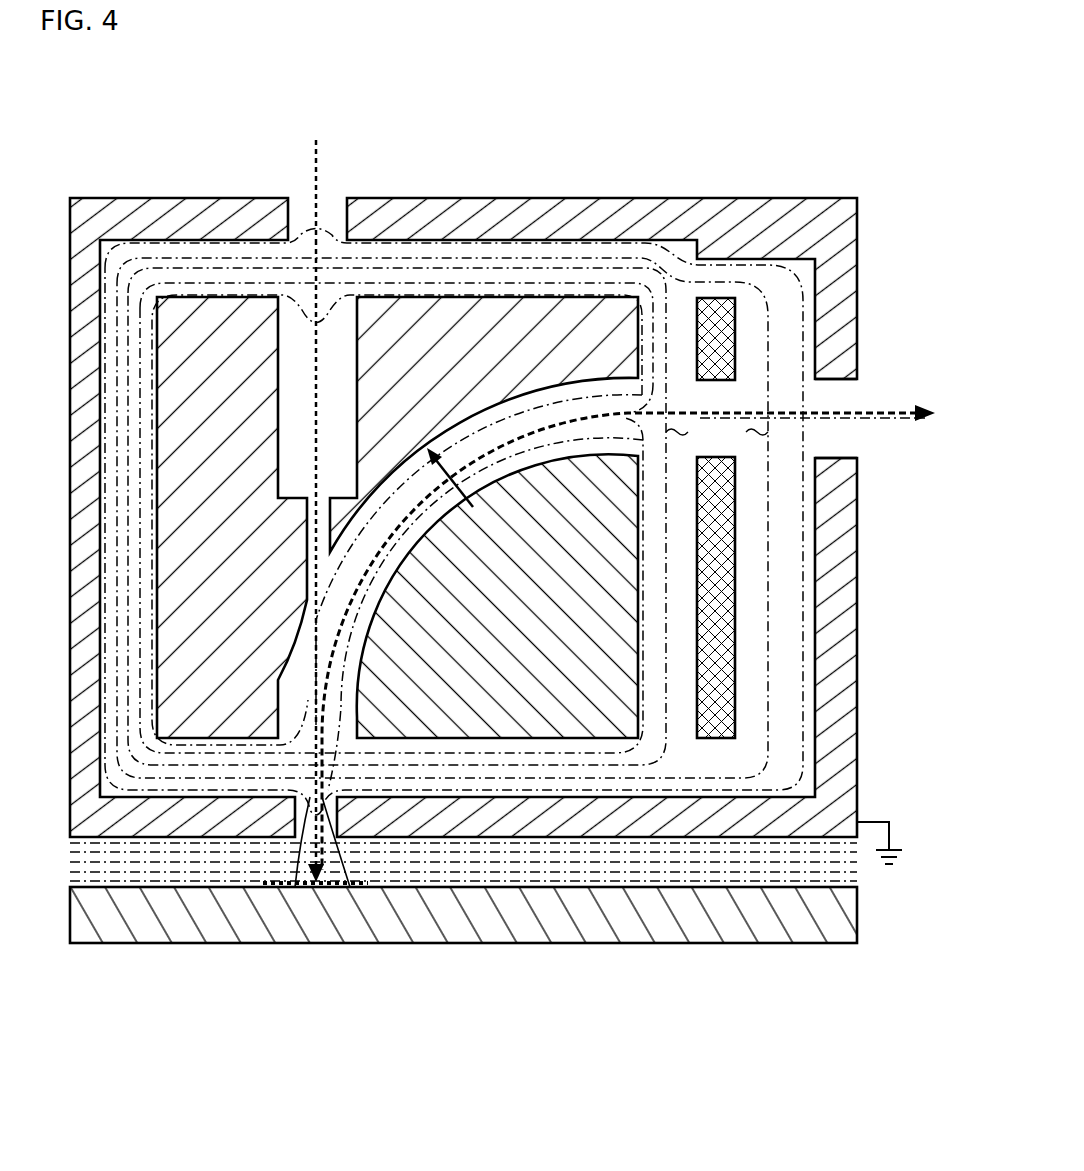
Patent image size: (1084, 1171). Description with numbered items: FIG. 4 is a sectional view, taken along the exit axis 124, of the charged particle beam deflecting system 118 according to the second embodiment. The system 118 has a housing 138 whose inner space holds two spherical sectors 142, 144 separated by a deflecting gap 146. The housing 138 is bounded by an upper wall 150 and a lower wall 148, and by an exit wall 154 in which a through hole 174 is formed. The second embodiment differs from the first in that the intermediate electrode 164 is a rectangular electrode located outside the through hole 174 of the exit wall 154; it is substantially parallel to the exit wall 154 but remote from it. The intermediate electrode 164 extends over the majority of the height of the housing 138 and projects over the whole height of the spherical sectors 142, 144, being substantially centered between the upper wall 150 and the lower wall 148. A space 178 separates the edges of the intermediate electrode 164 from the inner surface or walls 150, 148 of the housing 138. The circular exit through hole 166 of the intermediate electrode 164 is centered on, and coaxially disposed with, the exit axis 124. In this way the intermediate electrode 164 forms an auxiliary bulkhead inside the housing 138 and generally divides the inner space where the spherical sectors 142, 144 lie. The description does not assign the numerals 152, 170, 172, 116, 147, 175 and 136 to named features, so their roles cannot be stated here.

The charged particle beam deflecting system 118 is at (127, 168).
The housing 138 is at (205, 212).
The inlet opening 152 is at (335, 210).
The electric field lines 170 is at (463, 576).
The upper wall 150 is at (602, 262).
The space 178 is at (700, 290).
The intermediate electrode 164 is at (732, 442).
The housing right wall 172 is at (832, 300).
The flow direction 116 is at (893, 410).
The exit axis 124 is at (903, 422).
The through hole 174 is at (827, 450).
The exit through hole 166 is at (696, 408).
The channel outlet 147 is at (626, 445).
The spherical sector 144 is at (193, 443).
The spherical sector 142 is at (481, 673).
The deflecting gap 146 is at (540, 453).
The exit wall 154 is at (835, 735).
The lower wall 148 is at (463, 946).
The jet 175 is at (295, 887).
The substrate surface 136 is at (515, 912).